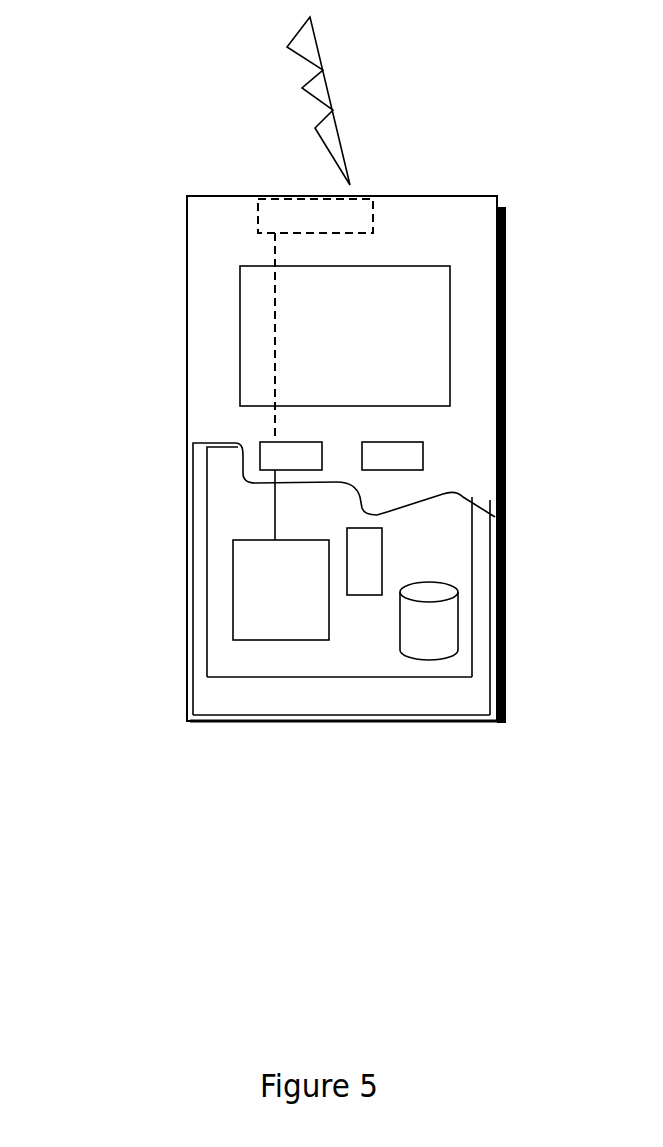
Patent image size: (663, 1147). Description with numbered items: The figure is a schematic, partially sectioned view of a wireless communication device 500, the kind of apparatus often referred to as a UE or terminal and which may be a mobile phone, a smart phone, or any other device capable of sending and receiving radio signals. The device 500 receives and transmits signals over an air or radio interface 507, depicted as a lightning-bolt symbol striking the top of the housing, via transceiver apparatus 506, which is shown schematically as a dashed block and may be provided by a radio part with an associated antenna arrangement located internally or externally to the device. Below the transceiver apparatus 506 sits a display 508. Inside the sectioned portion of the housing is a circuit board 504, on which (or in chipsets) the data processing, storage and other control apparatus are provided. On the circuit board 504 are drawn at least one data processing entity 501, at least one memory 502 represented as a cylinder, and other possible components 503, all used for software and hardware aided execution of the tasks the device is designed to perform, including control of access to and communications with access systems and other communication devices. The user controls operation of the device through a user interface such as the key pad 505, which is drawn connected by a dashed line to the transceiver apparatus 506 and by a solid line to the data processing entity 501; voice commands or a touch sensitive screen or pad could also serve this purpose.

The communication device 500 is at (187, 239).
The data processing entity 501 is at (240, 573).
The memory 502 is at (422, 633).
The other components 503 is at (365, 547).
The circuit board 504 is at (233, 660).
The key pad 505 is at (265, 457).
The transceiver apparatus 506 is at (363, 211).
The air or radio interface 507 is at (350, 124).
The display 508 is at (257, 322).